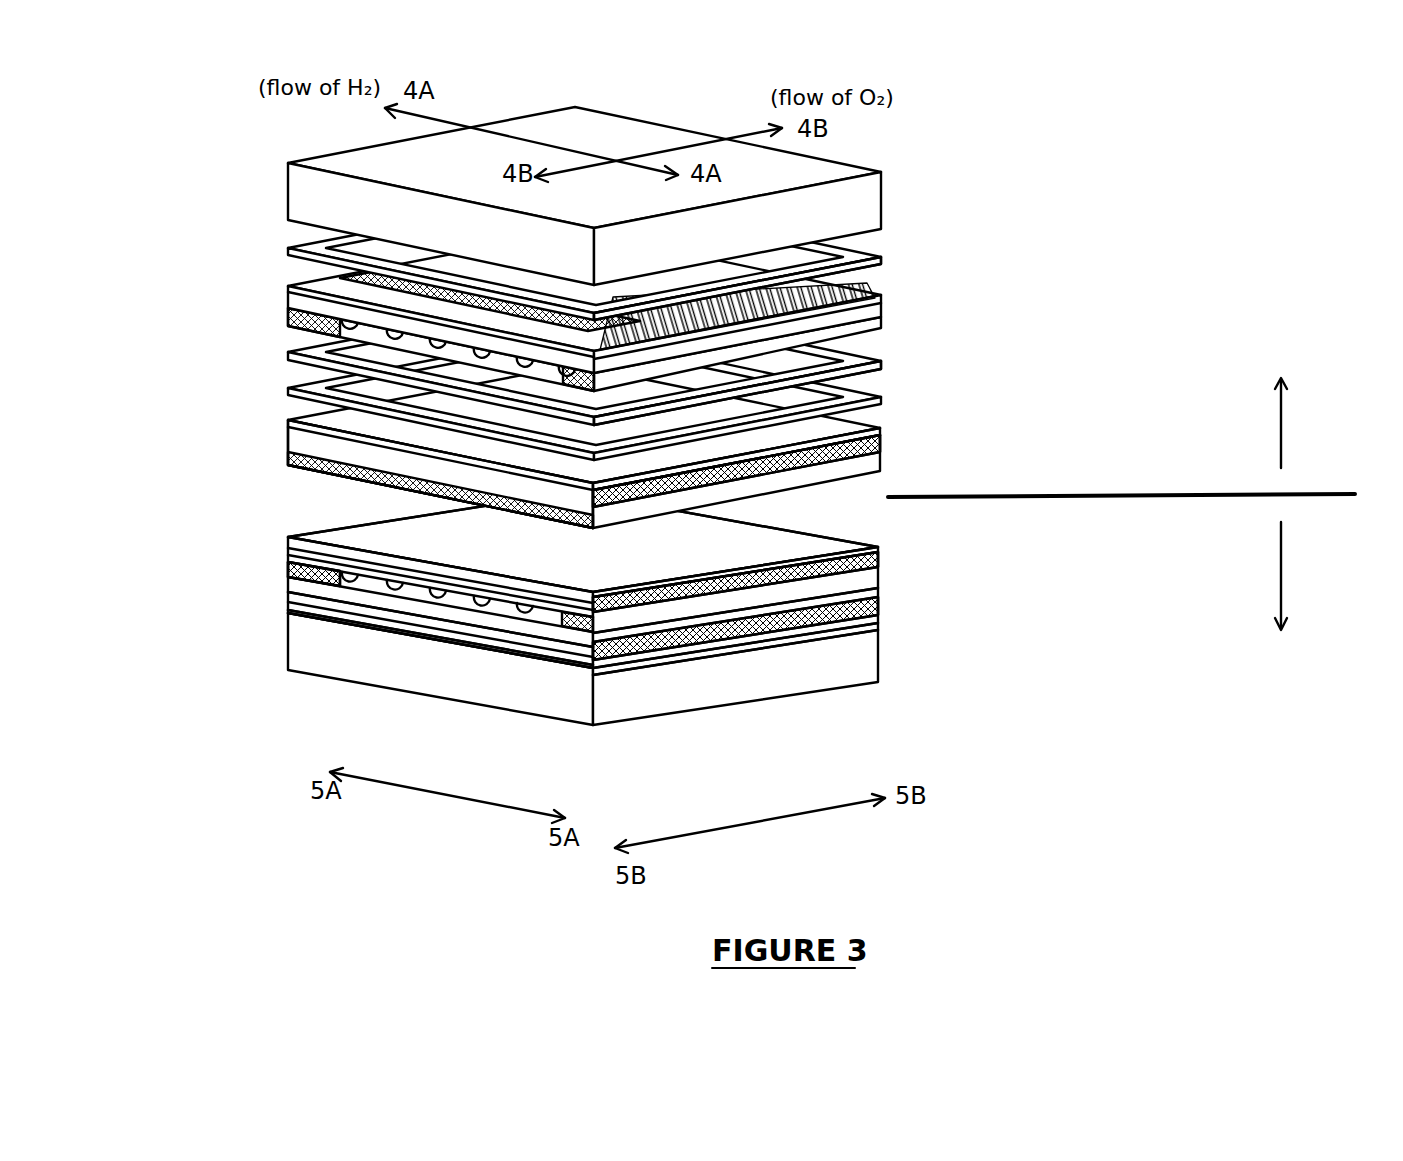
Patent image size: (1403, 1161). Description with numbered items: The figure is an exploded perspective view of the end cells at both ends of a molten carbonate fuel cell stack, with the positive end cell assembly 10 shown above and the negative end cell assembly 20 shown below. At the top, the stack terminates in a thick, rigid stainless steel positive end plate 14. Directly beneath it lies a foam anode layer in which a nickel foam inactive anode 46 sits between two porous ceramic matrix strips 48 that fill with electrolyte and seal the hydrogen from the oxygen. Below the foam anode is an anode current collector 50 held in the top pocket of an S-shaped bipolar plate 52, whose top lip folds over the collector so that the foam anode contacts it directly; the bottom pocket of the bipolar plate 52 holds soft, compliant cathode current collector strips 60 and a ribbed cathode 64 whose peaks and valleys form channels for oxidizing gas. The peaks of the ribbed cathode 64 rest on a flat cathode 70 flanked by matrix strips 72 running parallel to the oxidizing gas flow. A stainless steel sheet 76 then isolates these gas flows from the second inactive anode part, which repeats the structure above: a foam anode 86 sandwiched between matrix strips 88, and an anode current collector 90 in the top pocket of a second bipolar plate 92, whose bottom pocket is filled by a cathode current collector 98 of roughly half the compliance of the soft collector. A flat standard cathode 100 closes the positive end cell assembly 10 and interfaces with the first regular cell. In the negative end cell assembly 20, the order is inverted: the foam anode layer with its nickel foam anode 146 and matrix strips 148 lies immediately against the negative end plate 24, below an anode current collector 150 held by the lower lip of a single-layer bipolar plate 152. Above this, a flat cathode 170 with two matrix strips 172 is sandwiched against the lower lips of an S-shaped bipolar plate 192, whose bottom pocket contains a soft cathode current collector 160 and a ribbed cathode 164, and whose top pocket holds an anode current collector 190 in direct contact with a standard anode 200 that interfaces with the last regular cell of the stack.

The positive end cell assembly 10 is at (1174, 297).
The positive end plate 14 is at (883, 170).
The negative end cell assembly 20 is at (1180, 701).
The negative end plate 24 is at (879, 682).
The nickel foam inactive anode 46 is at (795, 280).
The matrix strips 48 is at (880, 262).
The anode current collector 50 is at (858, 376).
The bipolar plate 52 is at (292, 268).
The soft compliant cathode current collector 60 is at (293, 306).
The ribbed cathode 64 is at (340, 332).
The flat cathode 70 is at (330, 357).
The matrix strips 72 is at (878, 363).
The stainless steel sheet 76 is at (312, 394).
The foam anode 86 is at (878, 470).
The matrix strips 88 is at (881, 425).
The anode current collector 90 is at (880, 443).
The second bipolar plate 92 is at (310, 443).
The cathode current collector 98 is at (297, 473).
The flat standard cathode 100 is at (337, 482).
The nickel foam anode 146 is at (800, 632).
The matrix strips 148 is at (880, 617).
The anode current collector 150 is at (765, 625).
The single-layer bipolar plate 152 is at (385, 617).
The soft cathode current collector 160 is at (330, 572).
The ribbed cathode 164 is at (330, 590).
The flat cathode 170 is at (340, 613).
The matrix strips 172 is at (878, 588).
The anode current collector 190 is at (878, 553).
The S-shaped bipolar plate 192 is at (632, 620).
The standard anode 200 is at (745, 550).